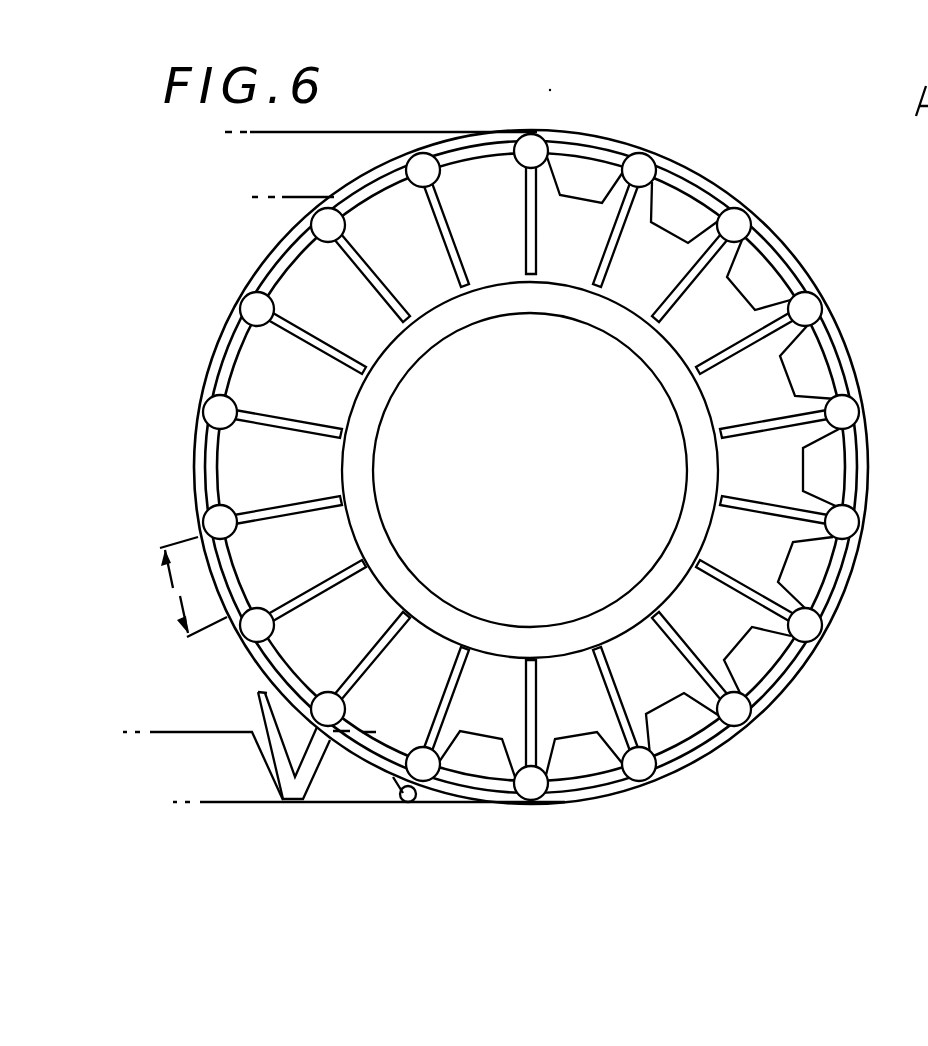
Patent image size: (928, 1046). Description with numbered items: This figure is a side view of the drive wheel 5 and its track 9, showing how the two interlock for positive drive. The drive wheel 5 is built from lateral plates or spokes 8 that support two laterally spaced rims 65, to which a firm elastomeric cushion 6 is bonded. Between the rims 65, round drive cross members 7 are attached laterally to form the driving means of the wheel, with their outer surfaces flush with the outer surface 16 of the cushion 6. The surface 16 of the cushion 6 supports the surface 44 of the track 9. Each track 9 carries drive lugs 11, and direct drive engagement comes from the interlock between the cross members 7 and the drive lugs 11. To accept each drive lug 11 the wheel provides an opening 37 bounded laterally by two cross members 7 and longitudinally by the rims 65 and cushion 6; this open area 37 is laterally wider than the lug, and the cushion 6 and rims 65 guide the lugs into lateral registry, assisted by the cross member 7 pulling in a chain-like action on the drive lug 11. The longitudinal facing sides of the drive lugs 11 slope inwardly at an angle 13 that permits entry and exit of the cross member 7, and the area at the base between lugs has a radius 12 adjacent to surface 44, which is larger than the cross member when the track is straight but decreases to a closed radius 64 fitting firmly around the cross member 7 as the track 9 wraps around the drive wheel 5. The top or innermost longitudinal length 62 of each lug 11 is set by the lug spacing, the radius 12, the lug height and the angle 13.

The drive wheel 5 is at (178, 372).
The elastomeric cushion 6 is at (226, 337).
The cross member 7 is at (258, 308).
The spoke 8 is at (298, 328).
The track 9 is at (183, 762).
The drive lug 11 is at (763, 653).
The radius 12 is at (413, 800).
The angle 13 is at (317, 778).
The surface of the cushion 16 is at (190, 462).
The opening 37 is at (178, 592).
The surface of the track 44 is at (222, 803).
The innermost longitudinal length of lug 62 is at (548, 740).
The closed radius 64 is at (745, 715).
The rim 65 is at (830, 582).